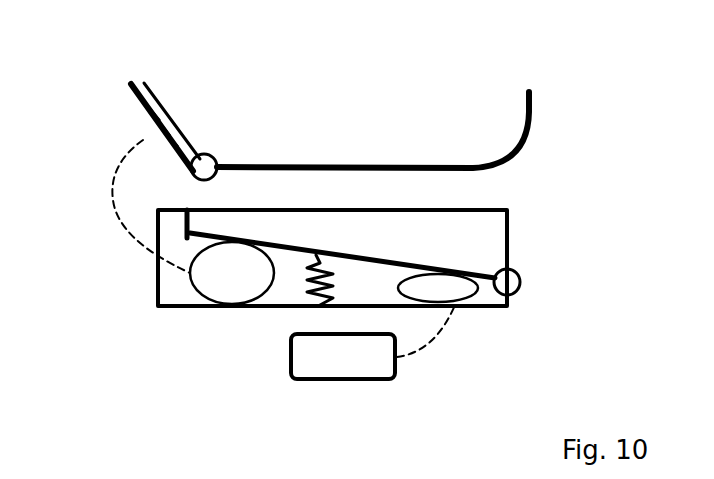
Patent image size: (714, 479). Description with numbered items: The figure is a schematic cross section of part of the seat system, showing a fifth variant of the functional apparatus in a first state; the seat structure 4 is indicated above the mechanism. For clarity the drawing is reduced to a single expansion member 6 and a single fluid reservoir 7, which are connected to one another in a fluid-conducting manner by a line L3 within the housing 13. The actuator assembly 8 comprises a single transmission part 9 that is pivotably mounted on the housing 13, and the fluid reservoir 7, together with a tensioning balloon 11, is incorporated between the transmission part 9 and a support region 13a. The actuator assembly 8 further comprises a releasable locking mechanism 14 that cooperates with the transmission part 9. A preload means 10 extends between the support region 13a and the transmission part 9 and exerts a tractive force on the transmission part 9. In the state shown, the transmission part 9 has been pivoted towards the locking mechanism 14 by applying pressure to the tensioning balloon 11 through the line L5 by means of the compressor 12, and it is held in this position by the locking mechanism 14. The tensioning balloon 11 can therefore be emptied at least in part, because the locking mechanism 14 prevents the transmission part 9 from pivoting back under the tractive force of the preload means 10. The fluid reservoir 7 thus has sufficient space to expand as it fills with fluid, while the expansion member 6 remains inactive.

The seat frame bar 4 is at (358, 111).
The expansion member 6 is at (190, 141).
The line L3 is at (116, 224).
The housing 13 is at (510, 228).
The releasable locking mechanism 14 is at (195, 229).
The transmission part 9 is at (381, 257).
The actuator assembly 8 is at (520, 263).
The fluid reservoir 7 is at (218, 306).
The preload means 10 is at (335, 276).
The tensioning balloon 11 is at (472, 310).
The compressor 12 is at (362, 371).
The support region 13a is at (273, 310).
The line L5 is at (437, 353).